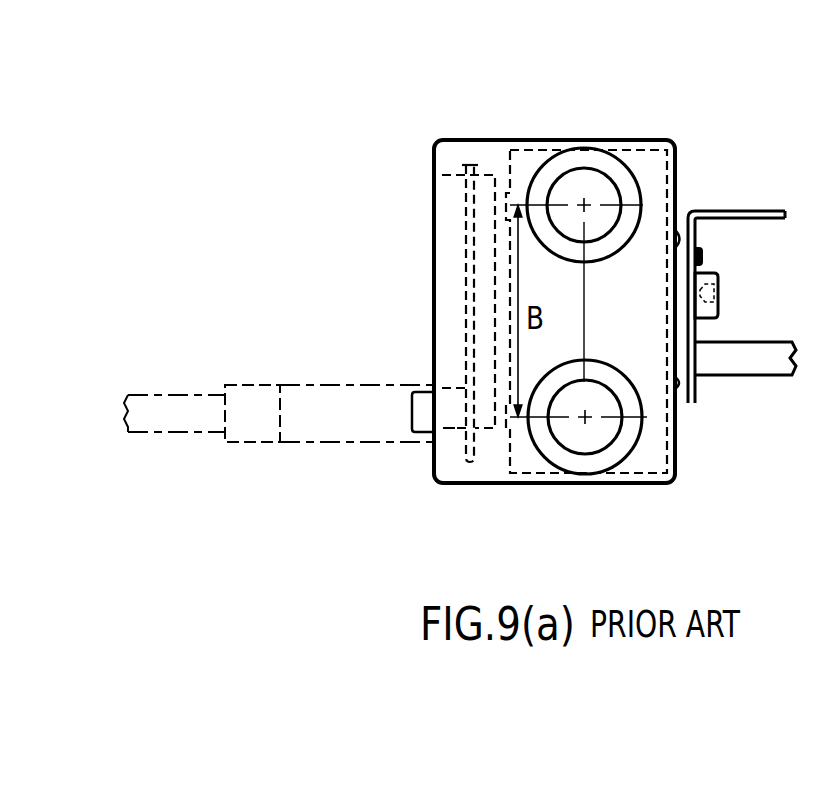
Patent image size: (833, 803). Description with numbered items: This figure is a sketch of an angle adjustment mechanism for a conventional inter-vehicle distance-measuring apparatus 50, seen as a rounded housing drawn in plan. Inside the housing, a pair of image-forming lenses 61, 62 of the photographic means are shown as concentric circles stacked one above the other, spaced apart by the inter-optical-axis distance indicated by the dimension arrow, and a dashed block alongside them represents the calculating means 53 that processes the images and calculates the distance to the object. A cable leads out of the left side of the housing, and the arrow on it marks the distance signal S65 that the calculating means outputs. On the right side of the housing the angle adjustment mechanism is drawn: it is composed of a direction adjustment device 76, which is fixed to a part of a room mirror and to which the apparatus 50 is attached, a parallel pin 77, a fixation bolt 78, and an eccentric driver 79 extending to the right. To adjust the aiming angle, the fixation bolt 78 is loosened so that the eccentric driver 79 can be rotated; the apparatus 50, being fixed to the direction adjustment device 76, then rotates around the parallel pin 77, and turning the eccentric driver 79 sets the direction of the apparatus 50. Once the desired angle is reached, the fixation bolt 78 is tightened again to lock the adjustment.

The inter-vehicle distance-measuring apparatus 50 is at (433, 215).
The calculating means 53 is at (468, 163).
The image-forming lens 61 is at (593, 180).
The image-forming lens 62 is at (595, 443).
The direction adjustment device 76 is at (717, 210).
The parallel pin 77 is at (702, 257).
The fixation bolt 78 is at (722, 293).
The eccentric driver 79 is at (750, 377).
The distance signal S65 is at (372, 413).